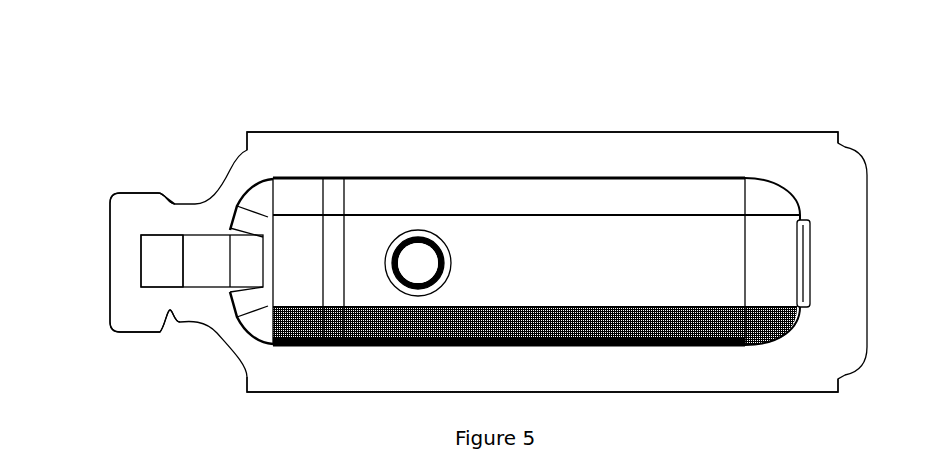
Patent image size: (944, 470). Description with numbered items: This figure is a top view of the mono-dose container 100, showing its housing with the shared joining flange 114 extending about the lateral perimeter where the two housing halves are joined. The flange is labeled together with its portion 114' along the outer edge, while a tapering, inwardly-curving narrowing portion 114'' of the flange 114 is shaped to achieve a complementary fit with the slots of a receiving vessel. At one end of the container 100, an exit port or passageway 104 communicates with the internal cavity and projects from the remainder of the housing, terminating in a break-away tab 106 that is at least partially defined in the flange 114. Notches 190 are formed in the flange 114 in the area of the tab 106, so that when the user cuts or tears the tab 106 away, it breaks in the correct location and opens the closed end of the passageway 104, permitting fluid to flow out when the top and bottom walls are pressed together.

The container 100 is at (447, 219).
The passageway 104 is at (177, 252).
The break-away tab 106 is at (157, 263).
The flange 114 is at (447, 262).
The flange portion 114' is at (142, 262).
The narrowing portion of the flange 114'' is at (542, 210).
The notches 190 is at (167, 331).